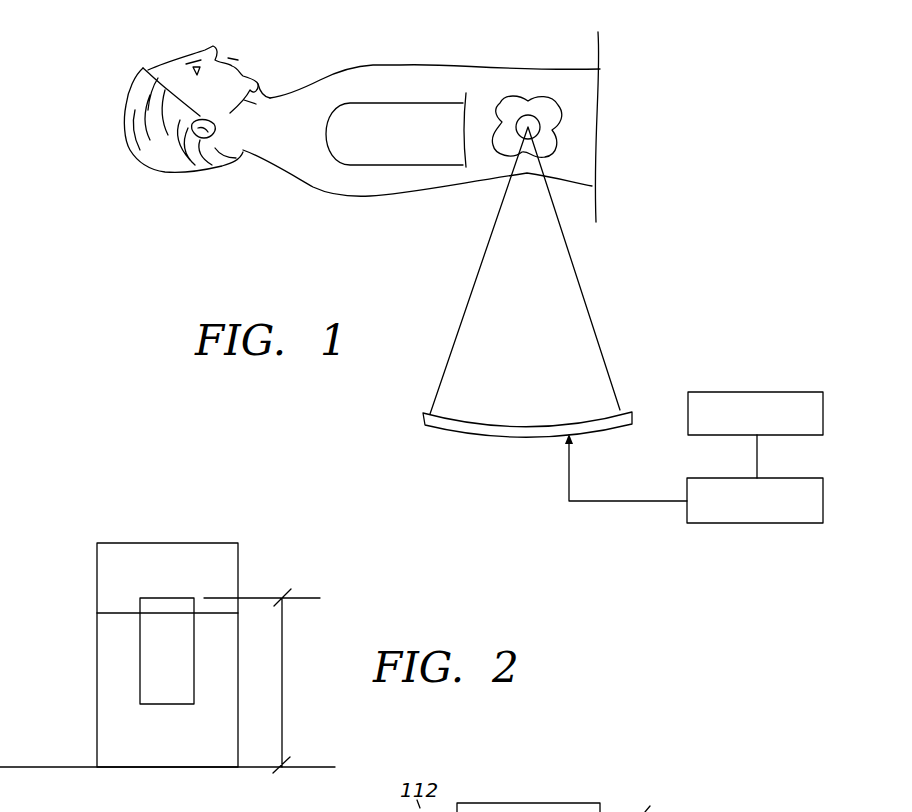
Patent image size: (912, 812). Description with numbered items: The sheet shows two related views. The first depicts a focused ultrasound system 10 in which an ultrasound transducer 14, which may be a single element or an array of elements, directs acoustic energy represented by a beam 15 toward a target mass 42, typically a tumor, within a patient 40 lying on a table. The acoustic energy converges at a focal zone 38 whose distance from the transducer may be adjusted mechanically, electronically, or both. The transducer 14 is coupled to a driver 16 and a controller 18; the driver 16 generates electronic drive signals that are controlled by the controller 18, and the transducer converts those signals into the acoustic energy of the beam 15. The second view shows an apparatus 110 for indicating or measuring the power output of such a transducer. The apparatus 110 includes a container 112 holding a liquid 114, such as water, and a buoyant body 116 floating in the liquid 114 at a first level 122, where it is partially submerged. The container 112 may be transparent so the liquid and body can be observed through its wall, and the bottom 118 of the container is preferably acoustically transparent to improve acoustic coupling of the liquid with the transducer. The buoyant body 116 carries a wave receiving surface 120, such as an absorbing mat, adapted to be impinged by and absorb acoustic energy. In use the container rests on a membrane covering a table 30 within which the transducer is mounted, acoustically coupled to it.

In FIG. 1, the focused ultrasound system 10 is at (716, 284).
In FIG. 1, the ultrasound transducer 14 is at (440, 434).
In FIG. 1, the beam 15 is at (577, 268).
In FIG. 1, the driver 16 is at (760, 523).
In FIG. 1, the controller 18 is at (757, 392).
In FIG. 2, the table 30 is at (310, 767).
In FIG. 1, the focal zone 38 is at (540, 125).
In FIG. 1, the patient 40 is at (376, 60).
In FIG. 1, the target mass 42 is at (528, 100).
In FIG. 2, the apparatus 110 is at (184, 657).
In FIG. 2, the container 112 is at (97, 563).
In FIG. 2, the liquid 114 is at (118, 663).
In FIG. 2, the buoyant body 116 is at (140, 625).
In FIG. 2, the bottom 118 is at (110, 767).
In FIG. 2, the wave receiving surface 120 is at (168, 704).
In FIG. 2, the first level 122 is at (262, 681).